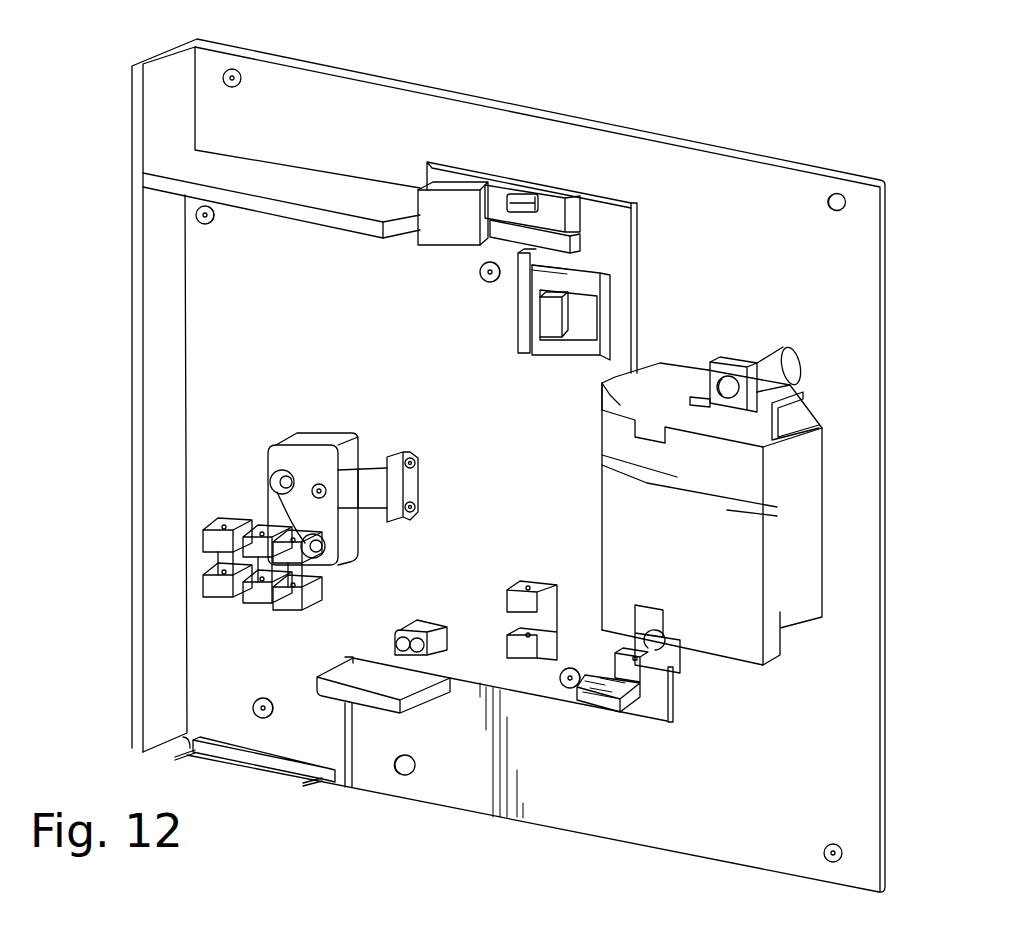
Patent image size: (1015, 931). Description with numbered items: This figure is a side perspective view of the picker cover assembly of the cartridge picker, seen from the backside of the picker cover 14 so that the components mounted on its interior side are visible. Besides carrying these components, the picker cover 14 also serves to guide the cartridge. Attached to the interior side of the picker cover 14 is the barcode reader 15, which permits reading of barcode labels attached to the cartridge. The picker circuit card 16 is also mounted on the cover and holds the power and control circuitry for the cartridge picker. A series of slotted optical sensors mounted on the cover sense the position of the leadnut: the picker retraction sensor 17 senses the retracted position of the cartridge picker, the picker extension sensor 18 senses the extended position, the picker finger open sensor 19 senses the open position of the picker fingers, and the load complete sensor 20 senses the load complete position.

The picker cover 14 is at (838, 276).
The barcode reader 15 is at (737, 545).
The picker circuit card 16 is at (603, 218).
The picker retraction sensor 17 is at (660, 658).
The picker extension sensor 18 is at (282, 605).
The picker finger open sensor 19 is at (257, 598).
The load complete sensor 20 is at (213, 590).